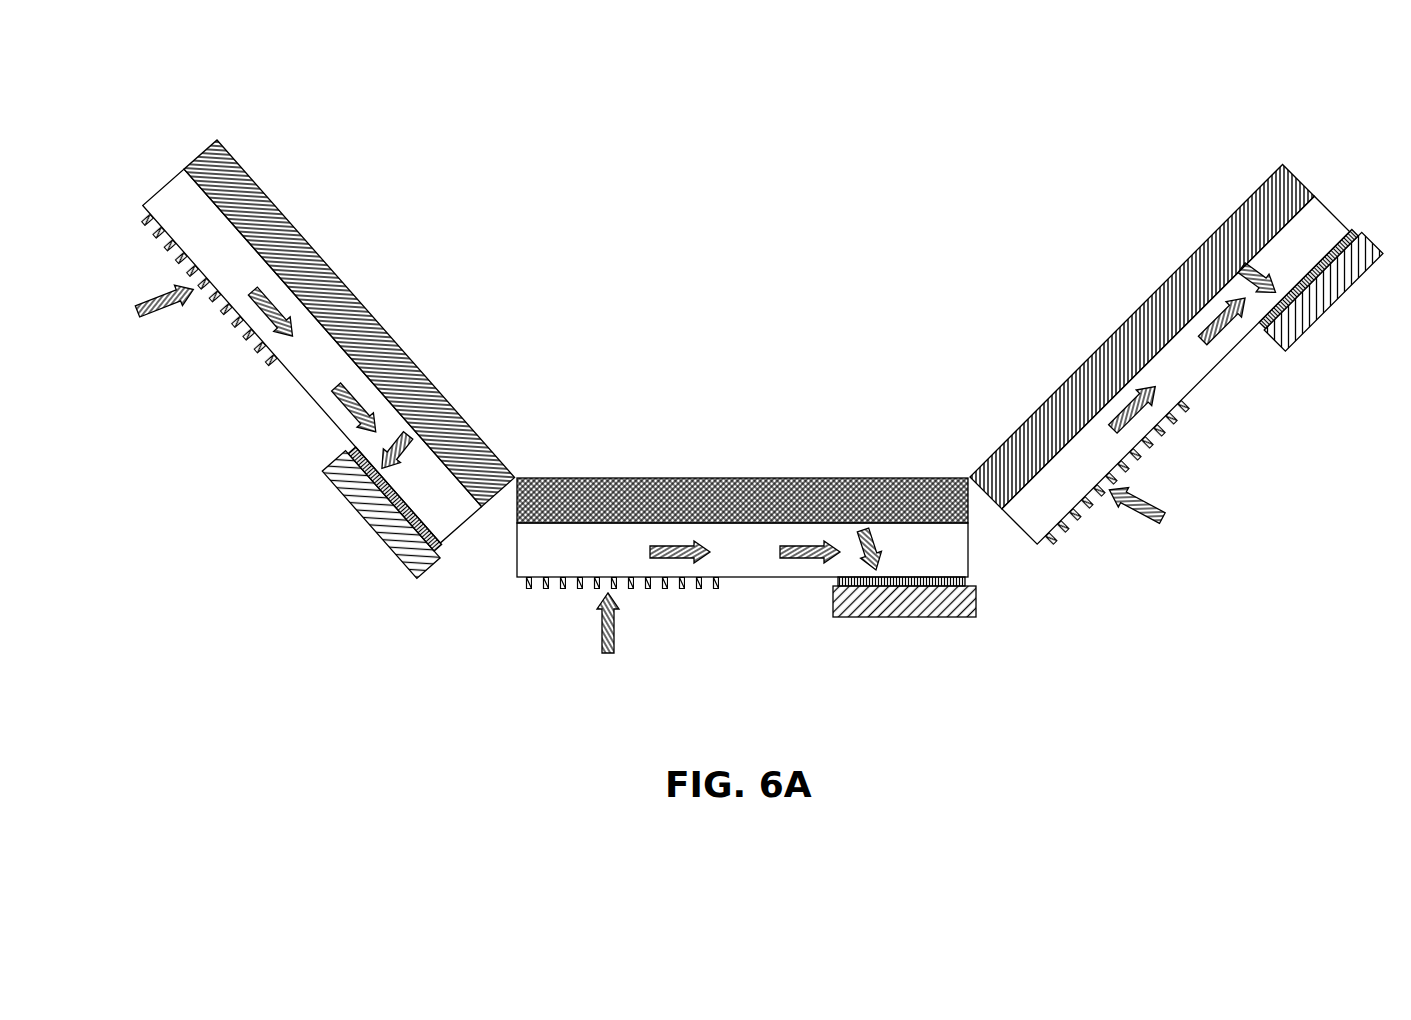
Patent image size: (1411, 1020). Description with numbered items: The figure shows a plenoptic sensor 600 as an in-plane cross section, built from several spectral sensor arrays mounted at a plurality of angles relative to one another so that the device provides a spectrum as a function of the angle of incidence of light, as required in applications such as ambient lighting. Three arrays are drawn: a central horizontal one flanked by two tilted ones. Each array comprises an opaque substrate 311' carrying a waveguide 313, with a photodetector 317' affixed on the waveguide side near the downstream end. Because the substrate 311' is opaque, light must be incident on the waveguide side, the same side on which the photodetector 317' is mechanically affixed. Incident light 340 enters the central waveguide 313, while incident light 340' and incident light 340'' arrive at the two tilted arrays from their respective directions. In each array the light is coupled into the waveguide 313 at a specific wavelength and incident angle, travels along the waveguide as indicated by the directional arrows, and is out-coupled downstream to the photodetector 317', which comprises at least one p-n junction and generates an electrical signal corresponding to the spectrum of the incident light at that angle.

The plenoptic sensor 600 is at (777, 140).
The opaque substrate 311' is at (749, 298).
The waveguide 313 is at (167, 175).
The photodetector 317' is at (853, 442).
The incident light 340 is at (608, 656).
The incident light 340' is at (139, 308).
The incident light 340'' is at (1170, 515).